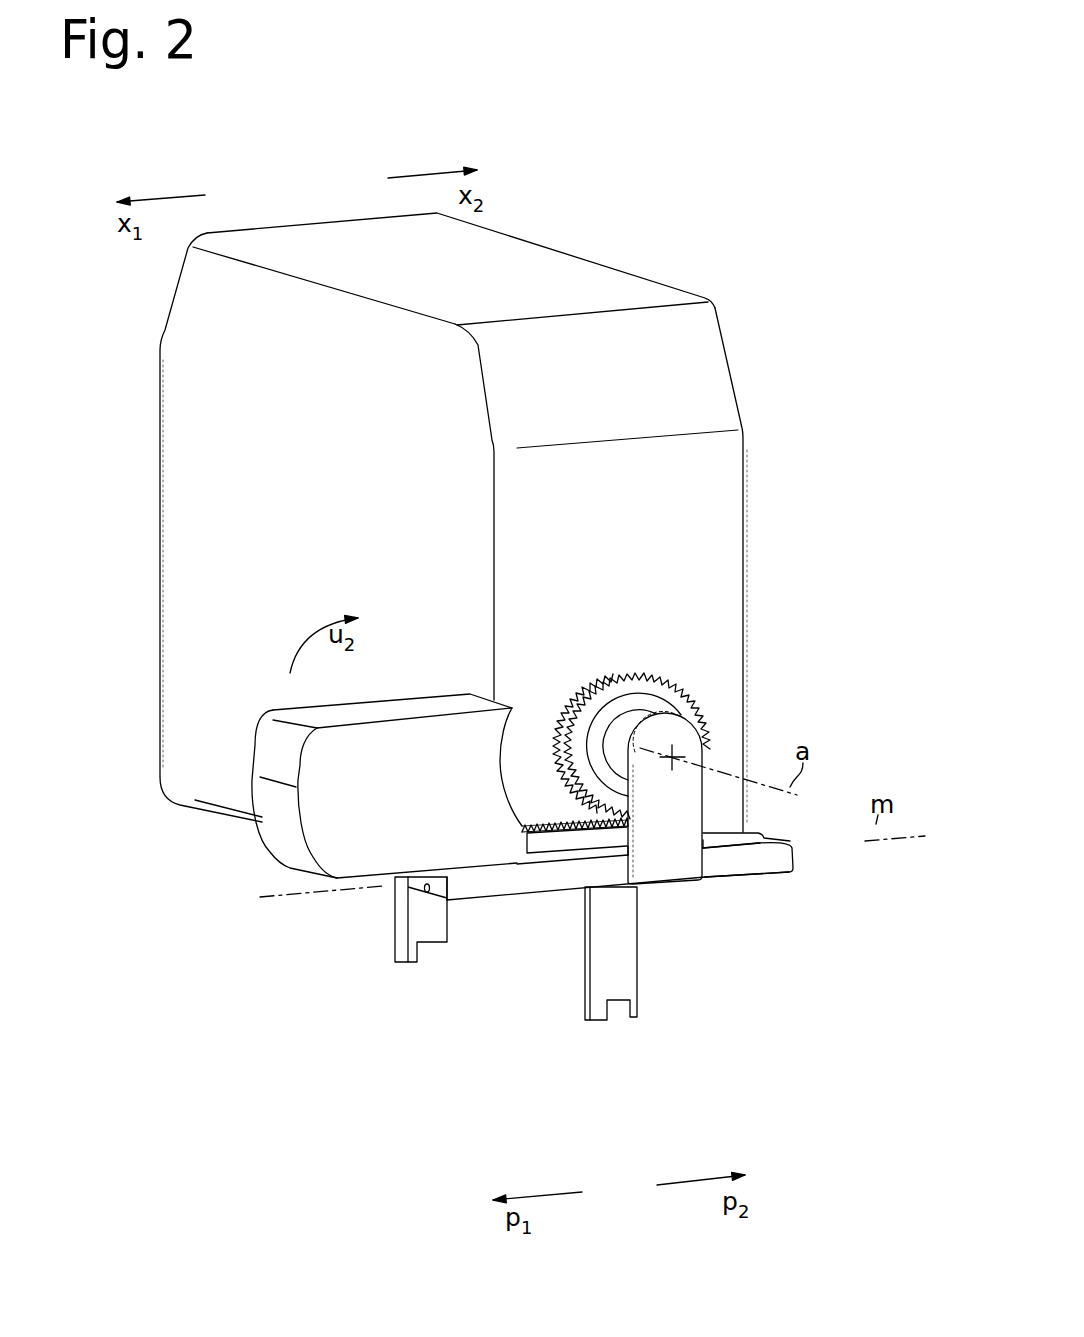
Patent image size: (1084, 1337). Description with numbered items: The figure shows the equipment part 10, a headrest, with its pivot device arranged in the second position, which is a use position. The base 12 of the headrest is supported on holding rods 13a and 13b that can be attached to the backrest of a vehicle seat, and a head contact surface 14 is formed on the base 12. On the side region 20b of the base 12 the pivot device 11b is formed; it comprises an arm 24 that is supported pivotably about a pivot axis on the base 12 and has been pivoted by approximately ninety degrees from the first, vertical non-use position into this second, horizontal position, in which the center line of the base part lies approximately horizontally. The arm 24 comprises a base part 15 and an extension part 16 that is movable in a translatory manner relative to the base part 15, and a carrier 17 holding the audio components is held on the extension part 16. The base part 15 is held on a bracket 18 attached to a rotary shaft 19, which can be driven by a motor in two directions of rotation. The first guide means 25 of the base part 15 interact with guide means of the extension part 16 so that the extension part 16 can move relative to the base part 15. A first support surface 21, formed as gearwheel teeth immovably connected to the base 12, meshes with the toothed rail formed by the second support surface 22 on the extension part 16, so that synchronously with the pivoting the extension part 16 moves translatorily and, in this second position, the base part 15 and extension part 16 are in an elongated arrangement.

The equipment part 10 is at (792, 152).
The base 12 is at (635, 284).
The head contact surface 14 is at (303, 455).
The side region 20b is at (705, 583).
The arm 24 is at (510, 692).
The carrier 17 is at (348, 790).
The rotary shaft 19 is at (683, 748).
The first support surface 21 is at (710, 744).
The second support surface 22 is at (543, 835).
The base part 15 is at (525, 883).
The extension part 16 is at (582, 843).
The bracket 18 is at (678, 827).
The first guide means 25 is at (707, 845).
The pivot device 11b is at (751, 884).
The holding rod 13a is at (407, 913).
The holding rod 13b is at (613, 967).